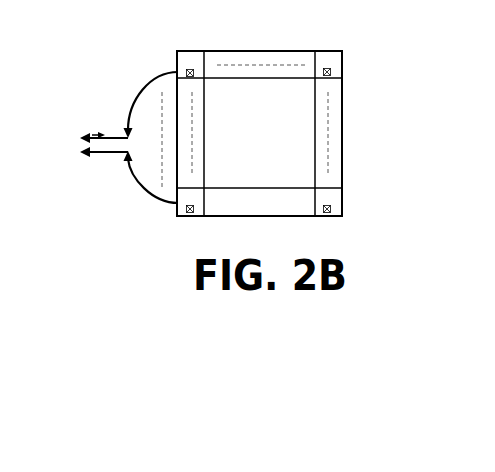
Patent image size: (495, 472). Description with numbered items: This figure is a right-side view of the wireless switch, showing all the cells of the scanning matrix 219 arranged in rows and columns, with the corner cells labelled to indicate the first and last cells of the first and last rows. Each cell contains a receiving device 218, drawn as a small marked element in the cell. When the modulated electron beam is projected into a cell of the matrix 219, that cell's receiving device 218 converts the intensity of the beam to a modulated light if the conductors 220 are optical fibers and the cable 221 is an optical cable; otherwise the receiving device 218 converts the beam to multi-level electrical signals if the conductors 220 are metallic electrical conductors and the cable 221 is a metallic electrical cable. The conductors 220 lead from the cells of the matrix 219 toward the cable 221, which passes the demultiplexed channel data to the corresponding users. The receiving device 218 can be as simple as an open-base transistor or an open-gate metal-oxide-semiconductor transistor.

The cell's receiving device 218 is at (343, 70).
The scanning matrix 219 is at (268, 41).
The conductors 220 is at (140, 84).
The cable 221 is at (104, 118).